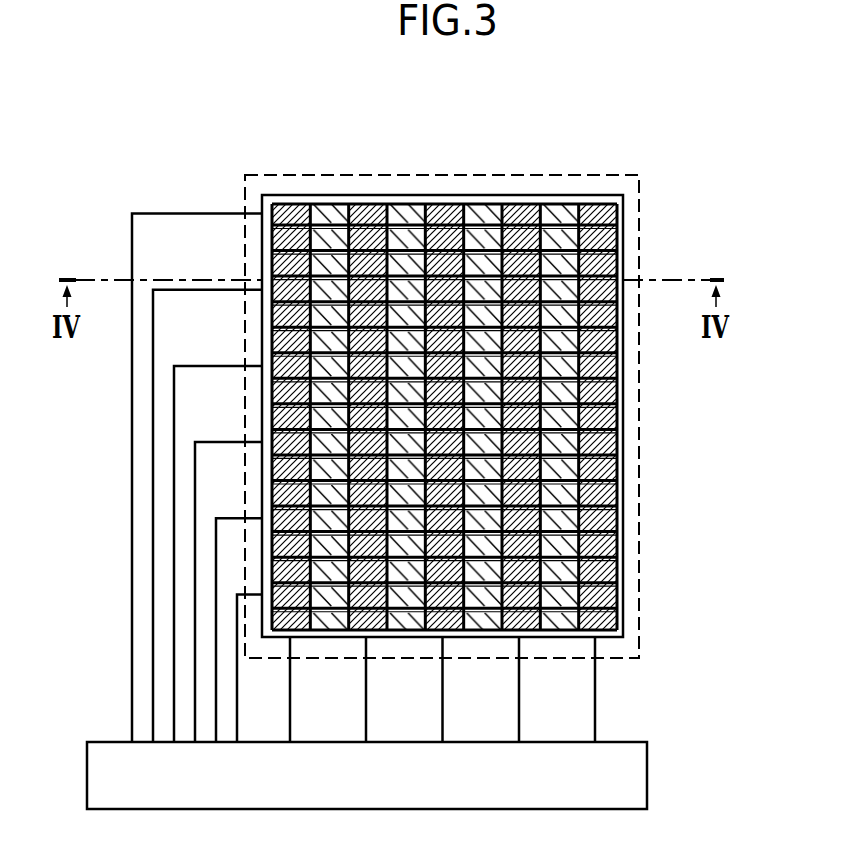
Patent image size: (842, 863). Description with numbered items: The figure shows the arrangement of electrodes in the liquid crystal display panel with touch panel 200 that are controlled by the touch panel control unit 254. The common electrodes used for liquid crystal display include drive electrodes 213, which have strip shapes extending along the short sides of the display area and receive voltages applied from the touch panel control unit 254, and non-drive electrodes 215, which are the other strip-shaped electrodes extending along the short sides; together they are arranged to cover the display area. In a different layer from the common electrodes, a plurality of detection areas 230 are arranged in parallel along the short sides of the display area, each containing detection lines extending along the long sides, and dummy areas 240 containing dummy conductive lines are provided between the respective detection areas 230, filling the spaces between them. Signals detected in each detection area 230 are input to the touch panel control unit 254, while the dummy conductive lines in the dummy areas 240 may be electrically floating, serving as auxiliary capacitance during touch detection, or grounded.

The liquid crystal display panel with touch panel 200 is at (525, 175).
The drive electrodes 213 is at (618, 210).
The non-drive electrodes 215 is at (618, 238).
The detection areas 230 is at (443, 217).
The dummy areas 240 is at (402, 218).
The touch panel control unit 254 is at (646, 773).